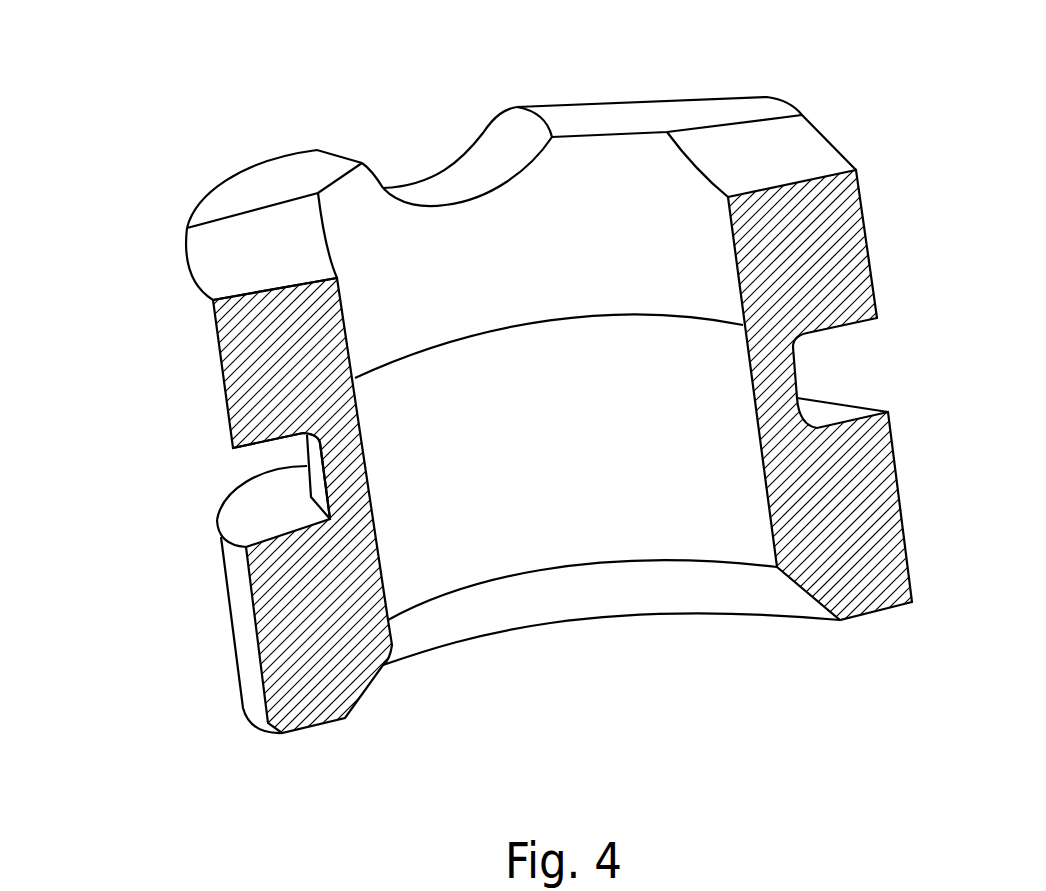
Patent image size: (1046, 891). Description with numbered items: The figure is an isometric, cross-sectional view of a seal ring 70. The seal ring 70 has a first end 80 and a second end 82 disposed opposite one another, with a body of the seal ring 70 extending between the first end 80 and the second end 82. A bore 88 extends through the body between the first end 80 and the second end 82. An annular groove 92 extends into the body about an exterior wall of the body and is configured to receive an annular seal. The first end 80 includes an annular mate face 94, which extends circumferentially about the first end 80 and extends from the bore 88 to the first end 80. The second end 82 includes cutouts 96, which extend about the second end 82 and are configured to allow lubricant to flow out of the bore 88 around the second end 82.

The seal ring 70 is at (523, 445).
The second end 82 is at (297, 180).
The cutouts 96 is at (431, 150).
The bore 88 is at (735, 251).
The annular mate face 94 is at (548, 597).
The first end 80 is at (300, 732).
The annular groove 92 is at (270, 460).